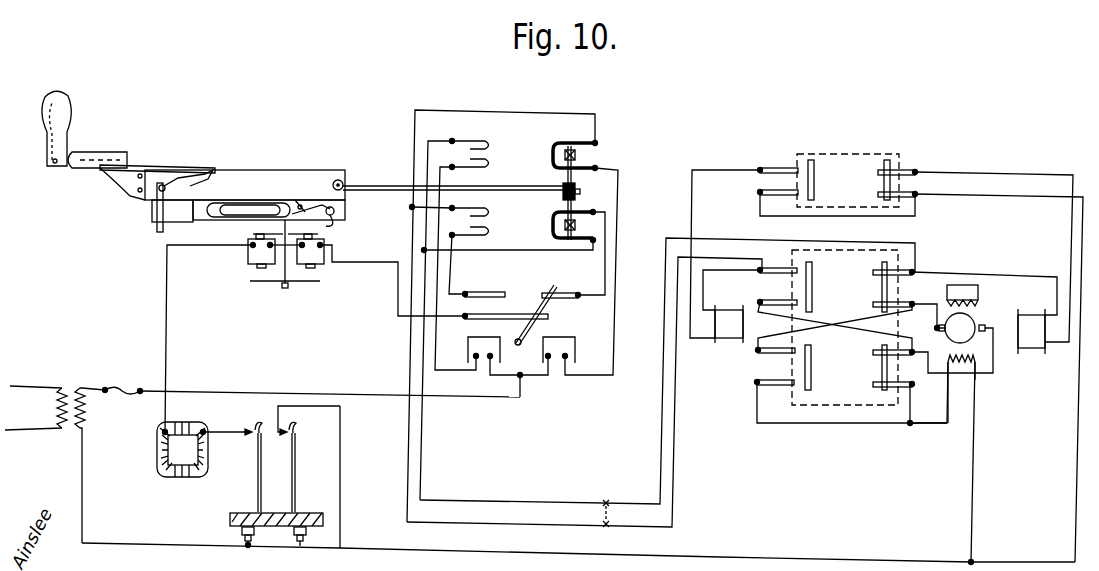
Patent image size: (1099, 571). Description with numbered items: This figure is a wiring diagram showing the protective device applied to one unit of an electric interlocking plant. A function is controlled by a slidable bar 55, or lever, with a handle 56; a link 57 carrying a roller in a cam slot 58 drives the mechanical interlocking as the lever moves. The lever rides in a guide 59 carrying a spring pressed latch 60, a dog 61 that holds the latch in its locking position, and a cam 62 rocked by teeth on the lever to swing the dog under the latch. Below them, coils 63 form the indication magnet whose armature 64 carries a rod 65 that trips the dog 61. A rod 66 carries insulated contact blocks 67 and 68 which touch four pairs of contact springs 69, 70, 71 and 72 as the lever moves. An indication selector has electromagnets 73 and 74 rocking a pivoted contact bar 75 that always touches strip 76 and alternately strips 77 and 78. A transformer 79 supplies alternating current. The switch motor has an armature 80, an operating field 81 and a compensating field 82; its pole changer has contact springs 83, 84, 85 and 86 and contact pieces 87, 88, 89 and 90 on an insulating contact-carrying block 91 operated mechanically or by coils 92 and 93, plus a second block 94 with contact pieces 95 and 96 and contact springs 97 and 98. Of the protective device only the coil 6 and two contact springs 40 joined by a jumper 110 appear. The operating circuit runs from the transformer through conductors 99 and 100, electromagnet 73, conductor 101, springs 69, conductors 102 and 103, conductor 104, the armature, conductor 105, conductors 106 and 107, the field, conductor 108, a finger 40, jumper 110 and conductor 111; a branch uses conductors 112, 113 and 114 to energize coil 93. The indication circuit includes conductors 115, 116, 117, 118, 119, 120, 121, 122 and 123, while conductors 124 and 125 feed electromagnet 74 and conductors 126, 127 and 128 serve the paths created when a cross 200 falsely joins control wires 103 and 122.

The coil 6 is at (196, 448).
The contact springs 40 is at (258, 478).
The slidable bar 55 is at (300, 178).
The handle 56 is at (64, 104).
The link 57 is at (157, 214).
The cam slot 58 is at (191, 178).
The guide 59 is at (207, 214).
The latch 60 is at (246, 217).
The dog 61 is at (308, 219).
The cam 62 is at (332, 227).
The coils 63 is at (286, 251).
The armature 64 is at (275, 283).
The rod 65 is at (283, 226).
The shaft 66 is at (513, 192).
The contact block 67 is at (576, 156).
The contact block 68 is at (576, 226).
The contact springs 69 is at (491, 160).
The contact springs 70 is at (560, 152).
The contact springs 71 is at (487, 218).
The contact springs 72 is at (554, 231).
The electromagnet 73 is at (468, 351).
The electromagnet 74 is at (575, 352).
The contact bar 75 is at (545, 313).
The contact strip 76 is at (510, 314).
The contact strip 77 is at (497, 292).
The contact strip 78 is at (563, 293).
The transformer 79 is at (72, 388).
The armature 80 is at (970, 323).
The operating field 81 is at (970, 366).
The compensating field 82 is at (962, 295).
The contact springs 83 is at (783, 275).
The contact springs 84 is at (783, 355).
The contact springs 85 is at (882, 280).
The contact springs 86 is at (880, 358).
The contact piece 87 is at (813, 283).
The contact piece 88 is at (893, 290).
The contact piece 89 is at (811, 362).
The contact piece 90 is at (891, 366).
The contact-carrying block 91 is at (837, 410).
The pole changer operating coil 92 is at (728, 338).
The pole changer operating coil 93 is at (1036, 348).
The contact-carrying block 94 is at (852, 208).
The contact piece 95 is at (815, 172).
The contact piece 96 is at (895, 183).
The contact springs 97 is at (787, 173).
The contact springs 98 is at (882, 175).
The conductor 99 is at (228, 392).
The conductor 100 is at (515, 377).
The conductor 101 is at (466, 374).
The conductor 102 is at (425, 156).
The conductor 103 is at (476, 503).
The conductor 104 is at (936, 310).
The conductor 105 is at (993, 376).
The conductor 106 is at (910, 406).
The conductor 107 is at (925, 426).
The conductor 108 is at (973, 463).
The jumper 110 is at (275, 548).
The conductor 111 is at (210, 547).
The conductor 112 is at (996, 276).
The conductor 113 is at (1071, 243).
The conductor 114 is at (1008, 198).
The conductor 115 is at (864, 325).
The conductor 116 is at (881, 425).
The conductor 117 is at (228, 431).
The conductor 118 is at (165, 405).
The conductor 119 is at (397, 292).
The conductor 120 is at (450, 265).
The conductor 121 is at (447, 208).
The conductor 122 is at (565, 527).
The conductor 123 is at (876, 336).
The conductor 124 is at (540, 380).
The conductor 125 is at (616, 307).
The conductor 126 is at (595, 124).
The conductor 127 is at (535, 251).
The conductor 128 is at (606, 266).
The cross 200 is at (609, 515).